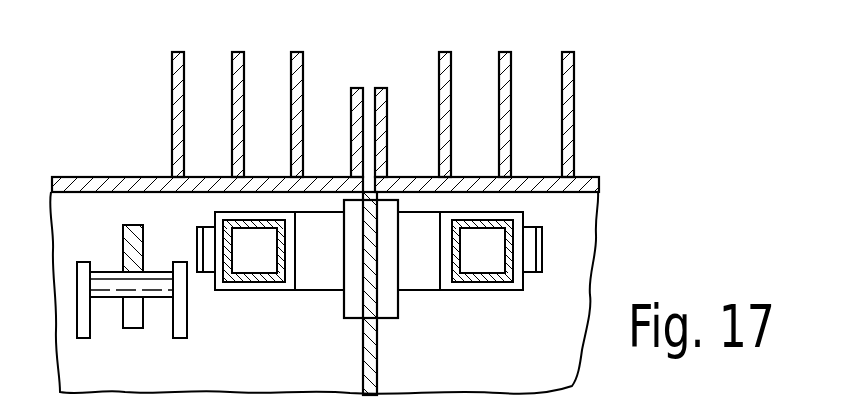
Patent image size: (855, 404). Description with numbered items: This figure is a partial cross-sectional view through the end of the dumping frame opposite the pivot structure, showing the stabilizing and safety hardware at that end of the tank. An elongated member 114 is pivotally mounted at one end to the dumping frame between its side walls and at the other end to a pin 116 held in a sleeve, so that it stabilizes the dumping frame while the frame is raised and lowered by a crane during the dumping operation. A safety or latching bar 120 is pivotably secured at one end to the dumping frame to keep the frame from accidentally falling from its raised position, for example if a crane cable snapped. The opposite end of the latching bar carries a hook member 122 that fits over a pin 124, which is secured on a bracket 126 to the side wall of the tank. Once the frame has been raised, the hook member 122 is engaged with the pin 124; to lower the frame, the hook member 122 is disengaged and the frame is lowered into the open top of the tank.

The elongated member 114 is at (465, 280).
The pin 116 is at (528, 275).
The latching bar 120 is at (128, 208).
The hook member 122 is at (143, 318).
The pin 124 is at (108, 287).
The bracket 126 is at (187, 322).